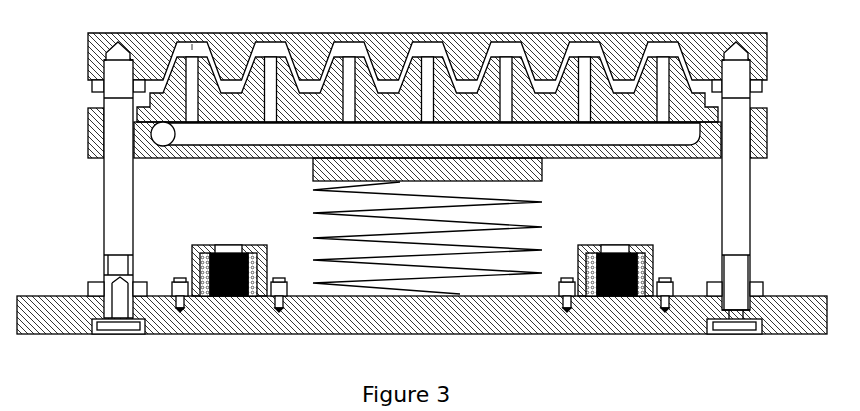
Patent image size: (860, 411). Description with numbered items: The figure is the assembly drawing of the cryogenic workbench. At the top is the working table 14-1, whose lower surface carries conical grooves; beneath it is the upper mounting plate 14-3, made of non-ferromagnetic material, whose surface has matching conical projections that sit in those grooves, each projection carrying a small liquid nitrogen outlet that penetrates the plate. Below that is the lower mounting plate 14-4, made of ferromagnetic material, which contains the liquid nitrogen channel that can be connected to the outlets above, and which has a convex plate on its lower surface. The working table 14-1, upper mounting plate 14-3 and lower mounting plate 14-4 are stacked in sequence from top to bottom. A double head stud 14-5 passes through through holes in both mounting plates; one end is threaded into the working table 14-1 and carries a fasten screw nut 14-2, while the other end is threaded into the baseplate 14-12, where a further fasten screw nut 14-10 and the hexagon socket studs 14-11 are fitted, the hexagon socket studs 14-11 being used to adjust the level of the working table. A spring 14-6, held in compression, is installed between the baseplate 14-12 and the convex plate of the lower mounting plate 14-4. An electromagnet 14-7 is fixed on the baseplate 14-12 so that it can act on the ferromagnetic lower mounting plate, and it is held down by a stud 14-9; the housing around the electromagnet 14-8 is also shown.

The working table 14-1 is at (828, 85).
The fasten screw nut 14-2 is at (762, 88).
The upper mounting plate 14-3 is at (828, 147).
The lower mounting plate 14-4 is at (828, 180).
The double head stud 14-5 is at (813, 230).
The spring 14-6 is at (600, 235).
The electromagnet 14-7 is at (290, 220).
The electromagnet housing 14-8 is at (312, 242).
The stud 14-9 is at (317, 267).
The fasten screw nut 14-10 is at (95, 290).
The hexagon socket studs 14-11 is at (190, 355).
The baseplate 14-12 is at (492, 355).